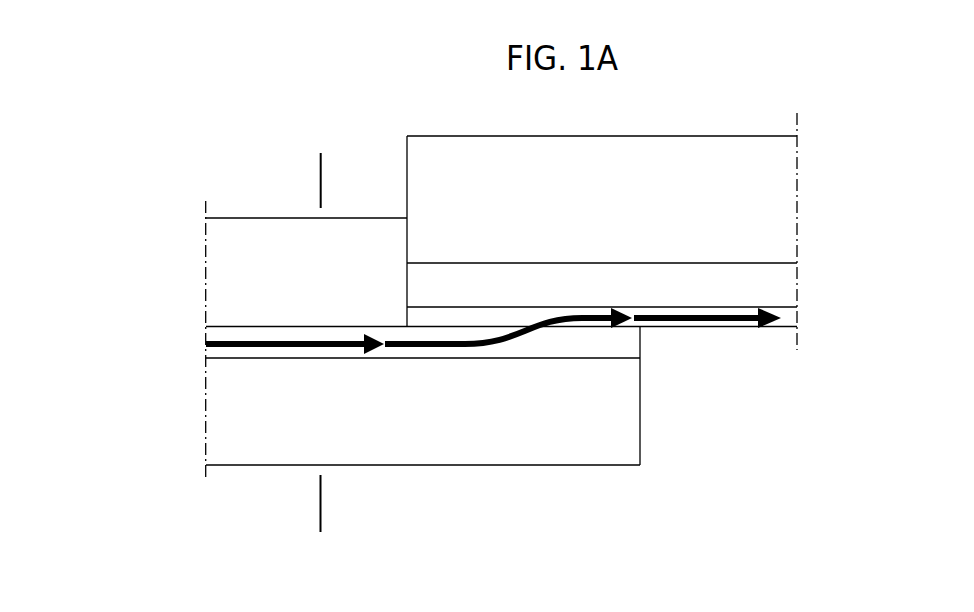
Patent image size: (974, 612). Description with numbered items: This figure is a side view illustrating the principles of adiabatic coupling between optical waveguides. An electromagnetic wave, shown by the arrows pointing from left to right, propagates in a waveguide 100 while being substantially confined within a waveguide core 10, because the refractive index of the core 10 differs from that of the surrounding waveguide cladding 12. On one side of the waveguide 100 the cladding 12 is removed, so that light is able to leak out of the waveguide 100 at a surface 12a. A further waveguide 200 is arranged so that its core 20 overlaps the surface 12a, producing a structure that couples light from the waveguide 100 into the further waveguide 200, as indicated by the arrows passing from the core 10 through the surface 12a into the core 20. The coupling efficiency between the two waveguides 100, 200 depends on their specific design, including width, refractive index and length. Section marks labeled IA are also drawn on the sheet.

The waveguide 100 is at (188, 284).
The further waveguide 200 is at (845, 132).
The waveguide cladding 12 is at (236, 233).
The surface 12a is at (602, 334).
The waveguide core 10 is at (215, 352).
The core 20 is at (789, 325).
The section line IA is at (310, 172).